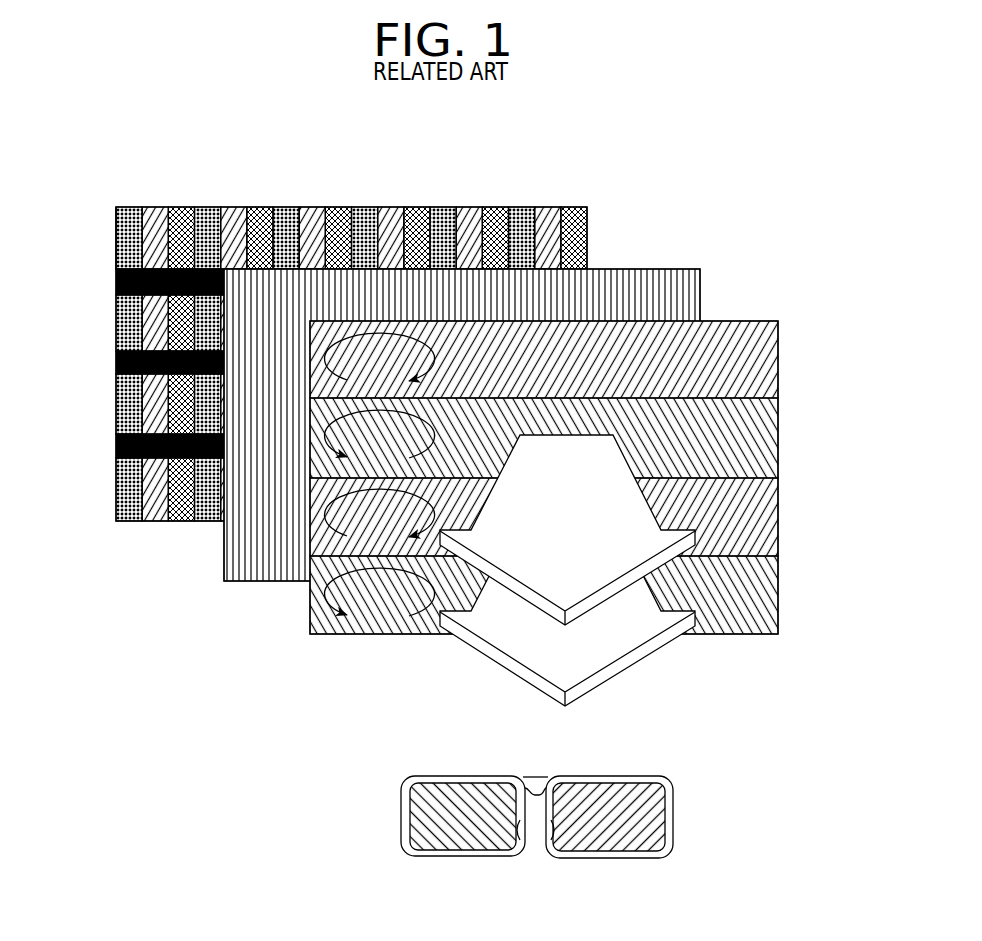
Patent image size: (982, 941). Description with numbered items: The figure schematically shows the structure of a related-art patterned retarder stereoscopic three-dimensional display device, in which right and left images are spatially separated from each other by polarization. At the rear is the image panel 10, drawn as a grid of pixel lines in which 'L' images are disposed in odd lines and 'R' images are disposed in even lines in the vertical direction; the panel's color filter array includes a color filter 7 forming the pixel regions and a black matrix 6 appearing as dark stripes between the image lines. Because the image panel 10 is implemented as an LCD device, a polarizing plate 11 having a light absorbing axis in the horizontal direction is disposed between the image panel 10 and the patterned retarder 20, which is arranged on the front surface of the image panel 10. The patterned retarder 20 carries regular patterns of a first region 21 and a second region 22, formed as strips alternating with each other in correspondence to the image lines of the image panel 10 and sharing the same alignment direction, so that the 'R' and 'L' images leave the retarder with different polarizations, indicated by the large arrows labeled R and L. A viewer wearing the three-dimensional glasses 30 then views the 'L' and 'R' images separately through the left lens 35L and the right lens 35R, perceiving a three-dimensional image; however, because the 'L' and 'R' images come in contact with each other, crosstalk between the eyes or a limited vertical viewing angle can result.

The black matrix 6 is at (117, 274).
The color filter 7 is at (117, 220).
The image panel 10 is at (350, 343).
The polarizing plate 11 is at (692, 282).
The patterned retarder 20 is at (578, 492).
The first region 21 is at (770, 348).
The second region 22 is at (770, 432).
The 3D glasses 30 is at (571, 793).
The left lens 35L is at (456, 782).
The right lens 35R is at (598, 782).